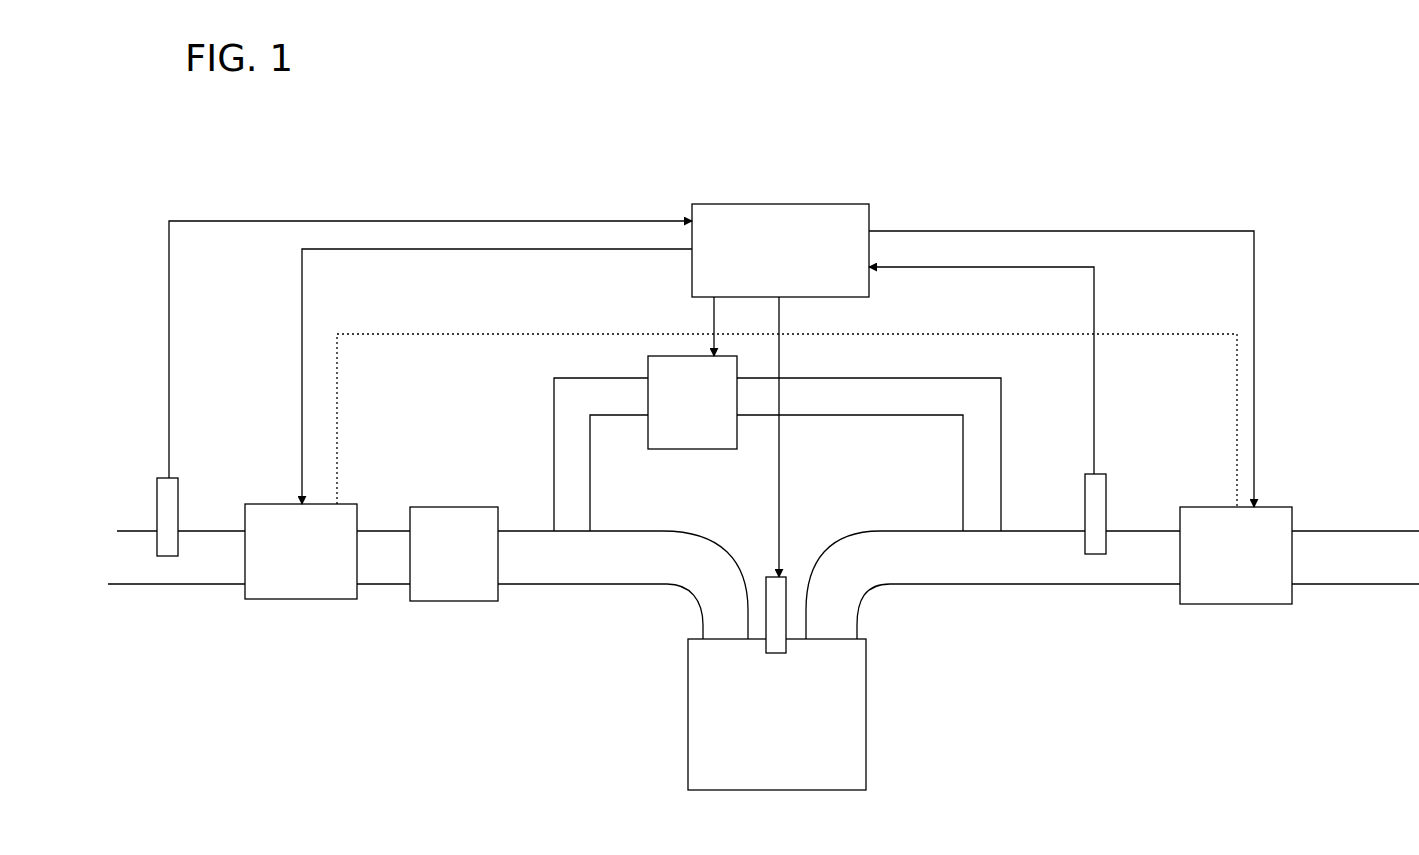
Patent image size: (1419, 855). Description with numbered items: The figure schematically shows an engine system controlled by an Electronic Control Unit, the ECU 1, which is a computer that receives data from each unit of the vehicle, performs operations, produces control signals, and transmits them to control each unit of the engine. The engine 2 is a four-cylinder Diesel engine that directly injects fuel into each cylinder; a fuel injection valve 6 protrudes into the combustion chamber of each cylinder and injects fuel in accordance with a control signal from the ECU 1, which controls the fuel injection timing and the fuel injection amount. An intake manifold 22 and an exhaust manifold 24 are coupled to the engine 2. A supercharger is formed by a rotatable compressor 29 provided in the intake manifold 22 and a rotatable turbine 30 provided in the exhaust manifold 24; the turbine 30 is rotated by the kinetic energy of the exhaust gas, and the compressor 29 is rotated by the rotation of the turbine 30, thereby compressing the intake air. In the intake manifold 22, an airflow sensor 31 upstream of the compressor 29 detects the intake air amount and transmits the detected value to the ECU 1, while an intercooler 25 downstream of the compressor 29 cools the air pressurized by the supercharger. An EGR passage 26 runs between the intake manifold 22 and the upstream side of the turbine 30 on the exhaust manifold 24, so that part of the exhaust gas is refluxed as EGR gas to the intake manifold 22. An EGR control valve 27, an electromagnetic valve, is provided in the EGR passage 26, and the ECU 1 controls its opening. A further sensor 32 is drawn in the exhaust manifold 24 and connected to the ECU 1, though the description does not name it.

The Electronic Control Unit (ECU) 1 is at (822, 203).
The engine 2 is at (867, 714).
The fuel injection valve 6 is at (788, 573).
The intake manifold 22 is at (568, 585).
The exhaust manifold 24 is at (1007, 585).
The intercooler 25 is at (473, 602).
The EGR passage 26 is at (1001, 462).
The EGR control valve 27 is at (693, 450).
The compressor 29 is at (300, 600).
The turbine 30 is at (1235, 605).
The airflow sensor 31 is at (178, 493).
The exhaust gas sensor 32 is at (1106, 512).